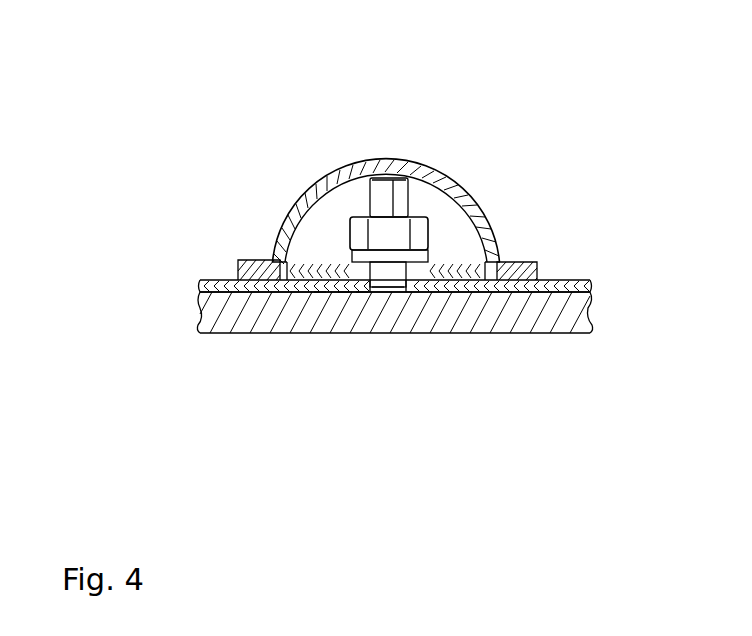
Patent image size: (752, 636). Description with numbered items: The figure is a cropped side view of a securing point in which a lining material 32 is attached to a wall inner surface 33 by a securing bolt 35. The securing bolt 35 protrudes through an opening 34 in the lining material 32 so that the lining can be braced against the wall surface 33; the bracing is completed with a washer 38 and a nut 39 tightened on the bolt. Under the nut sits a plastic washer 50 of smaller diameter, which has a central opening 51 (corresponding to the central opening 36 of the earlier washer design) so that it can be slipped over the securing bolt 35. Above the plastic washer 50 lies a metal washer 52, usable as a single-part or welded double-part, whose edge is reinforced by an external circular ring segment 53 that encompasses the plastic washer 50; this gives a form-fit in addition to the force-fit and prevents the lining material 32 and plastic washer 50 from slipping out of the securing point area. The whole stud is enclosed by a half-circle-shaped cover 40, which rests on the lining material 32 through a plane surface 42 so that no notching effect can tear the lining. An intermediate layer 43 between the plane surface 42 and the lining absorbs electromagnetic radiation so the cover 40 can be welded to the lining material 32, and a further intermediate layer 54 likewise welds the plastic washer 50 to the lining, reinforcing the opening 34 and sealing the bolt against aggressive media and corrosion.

The lining material 32 is at (207, 276).
The wall inner surface 33 is at (553, 335).
The opening 34 is at (405, 180).
The securing bolt 35 is at (383, 281).
The central opening 36 is at (360, 300).
The washer 38 is at (348, 250).
The nut 39 is at (362, 228).
The cover 40 is at (430, 173).
The plane surface 42 is at (512, 293).
The intermediate layer 43 is at (538, 278).
The plastic washer 50 is at (585, 143).
The central opening 51 is at (395, 177).
The metal washer 52 is at (320, 300).
The external circular ring segment 53 is at (290, 280).
The intermediate layer 54 is at (343, 300).